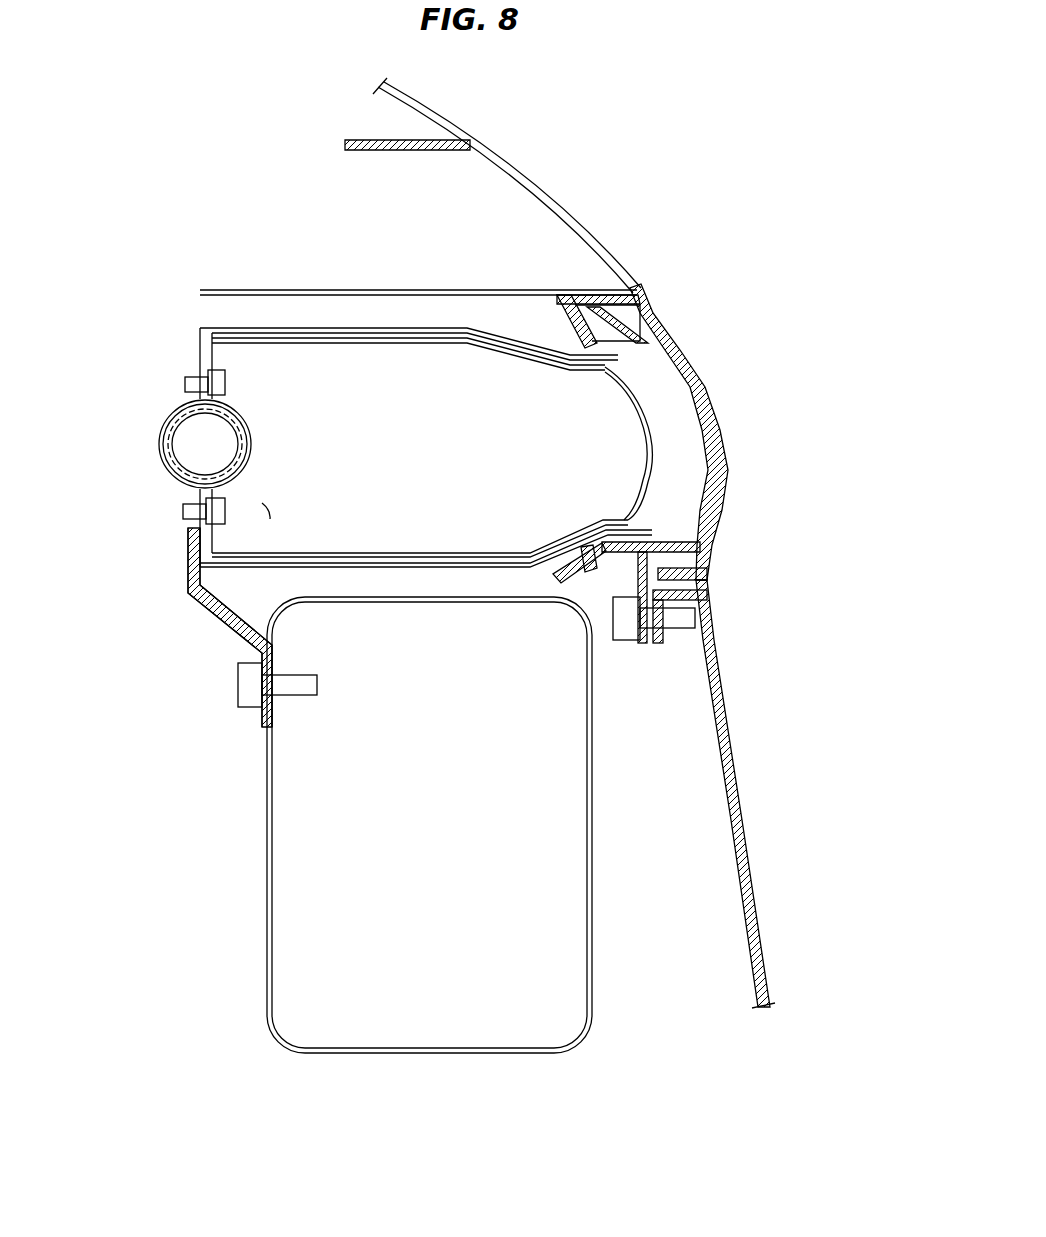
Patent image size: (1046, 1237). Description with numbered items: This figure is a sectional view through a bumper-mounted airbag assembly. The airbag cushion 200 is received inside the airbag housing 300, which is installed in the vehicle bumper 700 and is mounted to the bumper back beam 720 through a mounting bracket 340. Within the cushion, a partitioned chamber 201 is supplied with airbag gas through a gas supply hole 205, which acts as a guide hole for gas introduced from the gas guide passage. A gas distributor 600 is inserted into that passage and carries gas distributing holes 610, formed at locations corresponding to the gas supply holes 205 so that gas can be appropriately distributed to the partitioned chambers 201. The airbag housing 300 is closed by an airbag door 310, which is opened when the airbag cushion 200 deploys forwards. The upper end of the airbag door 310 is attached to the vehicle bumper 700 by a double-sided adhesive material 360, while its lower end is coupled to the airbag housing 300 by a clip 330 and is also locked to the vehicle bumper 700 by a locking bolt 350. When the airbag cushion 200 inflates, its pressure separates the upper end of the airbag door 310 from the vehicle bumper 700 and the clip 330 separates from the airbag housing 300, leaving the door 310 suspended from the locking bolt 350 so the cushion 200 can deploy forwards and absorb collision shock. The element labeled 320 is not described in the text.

The airbag cushion 200 is at (650, 450).
The partitioned chamber 201 is at (265, 508).
The gas supply hole 205 is at (239, 452).
The airbag housing 300 is at (405, 328).
The airbag door 310 is at (693, 388).
The mounting ring 320 is at (240, 402).
The clip 330 is at (590, 577).
The mounting bracket 340 is at (217, 612).
The locking bolt 350 is at (680, 622).
The double-sided adhesive material 360 is at (583, 328).
The gas distributor 600 is at (170, 445).
The gas distributing hole 610 is at (238, 442).
The vehicle bumper 700 is at (748, 797).
The bumper back beam 720 is at (267, 905).